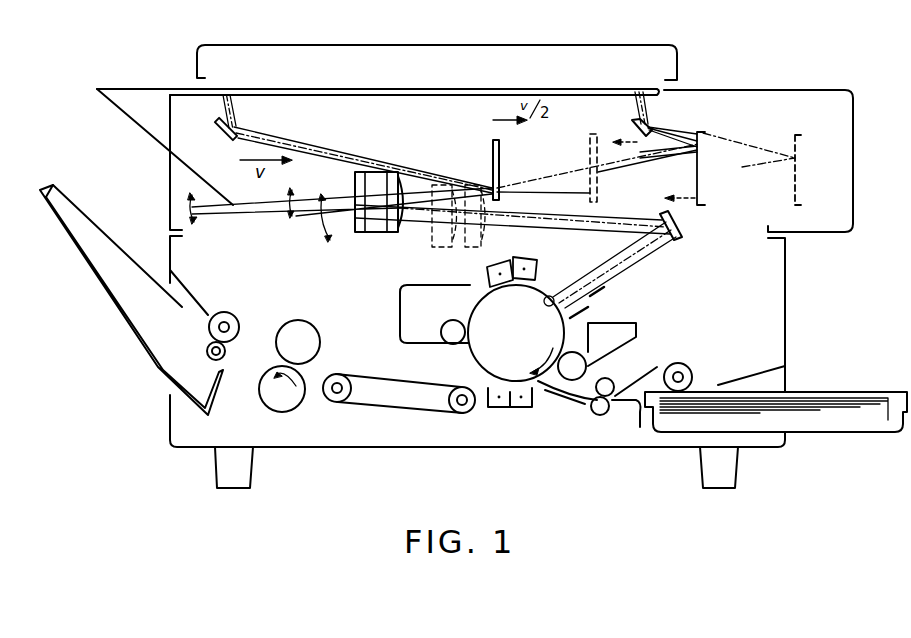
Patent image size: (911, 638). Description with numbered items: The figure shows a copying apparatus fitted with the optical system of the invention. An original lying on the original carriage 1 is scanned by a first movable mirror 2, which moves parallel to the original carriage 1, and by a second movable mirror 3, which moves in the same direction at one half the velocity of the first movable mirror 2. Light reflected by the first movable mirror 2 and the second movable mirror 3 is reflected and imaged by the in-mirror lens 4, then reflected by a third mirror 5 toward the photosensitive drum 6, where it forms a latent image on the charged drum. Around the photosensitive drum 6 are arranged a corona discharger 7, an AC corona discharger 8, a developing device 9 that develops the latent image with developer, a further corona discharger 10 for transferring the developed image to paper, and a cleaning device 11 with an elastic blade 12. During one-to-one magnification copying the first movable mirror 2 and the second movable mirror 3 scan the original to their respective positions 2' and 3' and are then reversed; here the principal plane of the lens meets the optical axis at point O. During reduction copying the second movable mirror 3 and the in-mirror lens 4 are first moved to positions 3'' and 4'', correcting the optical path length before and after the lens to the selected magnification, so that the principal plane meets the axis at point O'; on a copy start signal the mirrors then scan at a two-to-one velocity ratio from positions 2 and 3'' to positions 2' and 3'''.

The original carriage 1 is at (334, 88).
The first movable mirror 2 is at (341, 144).
The position of first movable mirror 2' is at (664, 125).
The second movable mirror 3 is at (595, 170).
The position of second movable mirror 3' is at (730, 168).
The position of second movable mirror 3'' is at (613, 168).
The position of second movable mirror 3''' is at (816, 170).
The in-mirror lens 4 is at (429, 219).
The position of in-mirror lens 4'' is at (440, 225).
The third mirror 5 is at (677, 238).
The photosensitive drum 6 is at (549, 296).
The corona discharger 7 is at (514, 257).
The AC corona discharger 8 is at (590, 303).
The developing device 9 is at (630, 337).
The corona discharger 10 is at (520, 408).
The cleaning device 11 is at (425, 342).
The elastic blade 12 is at (469, 295).
The intersection between principal plane of in-mirror lens and optical axis O is at (347, 186).
The intersection between principal plane of in-mirror lens and optical axis O' is at (454, 248).